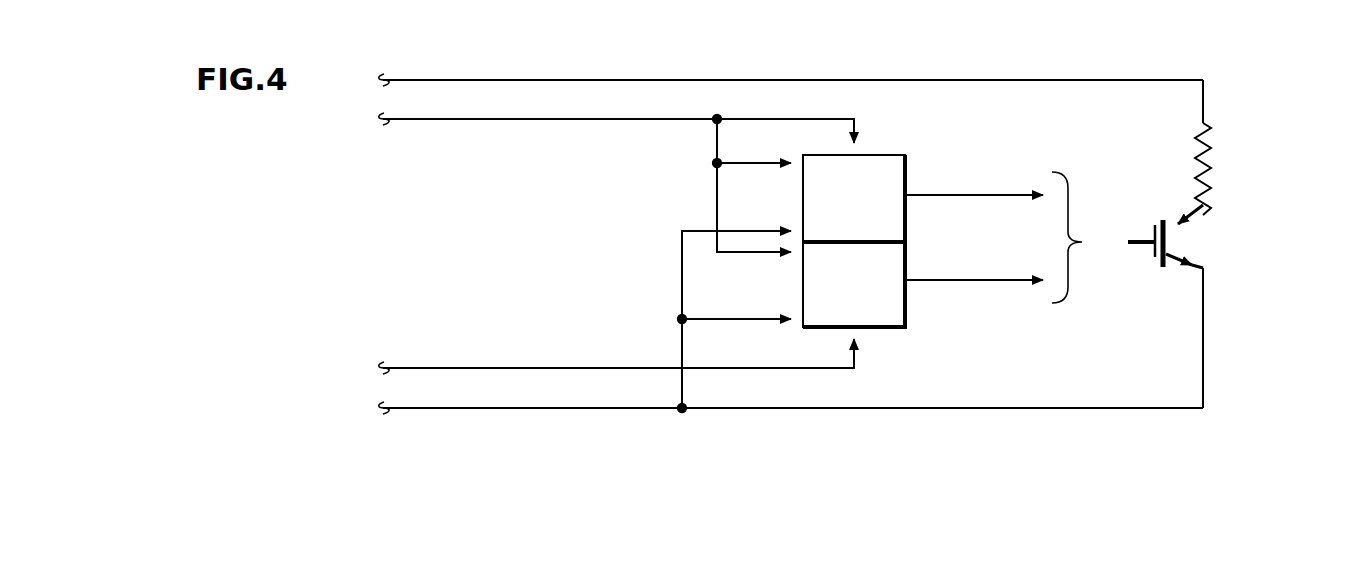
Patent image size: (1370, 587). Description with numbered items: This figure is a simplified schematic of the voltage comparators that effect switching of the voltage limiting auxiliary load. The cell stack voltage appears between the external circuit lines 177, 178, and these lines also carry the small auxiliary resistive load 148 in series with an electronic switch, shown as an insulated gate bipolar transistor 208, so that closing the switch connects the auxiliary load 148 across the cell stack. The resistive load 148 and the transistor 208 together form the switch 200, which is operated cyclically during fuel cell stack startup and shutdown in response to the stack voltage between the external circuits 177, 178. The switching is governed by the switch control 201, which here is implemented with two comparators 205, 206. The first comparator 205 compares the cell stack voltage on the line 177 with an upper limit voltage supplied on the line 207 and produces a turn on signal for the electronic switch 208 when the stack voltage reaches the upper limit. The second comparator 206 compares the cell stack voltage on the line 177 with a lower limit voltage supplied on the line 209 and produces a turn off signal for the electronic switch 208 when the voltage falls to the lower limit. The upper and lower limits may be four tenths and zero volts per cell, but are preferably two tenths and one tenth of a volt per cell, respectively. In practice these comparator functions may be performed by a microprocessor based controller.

The external circuit line 177 is at (491, 80).
The upper limit voltage line 207 is at (611, 119).
The comparator 205 is at (892, 155).
The comparator 206 is at (877, 329).
The lower limit voltage line 209 is at (617, 368).
The external circuit line 178 is at (484, 408).
The switch control 201 is at (990, 72).
The auxiliary resistive load 148 is at (1205, 185).
The insulated gate bipolar transistor 208 is at (1160, 260).
The switch 200 is at (1252, 199).